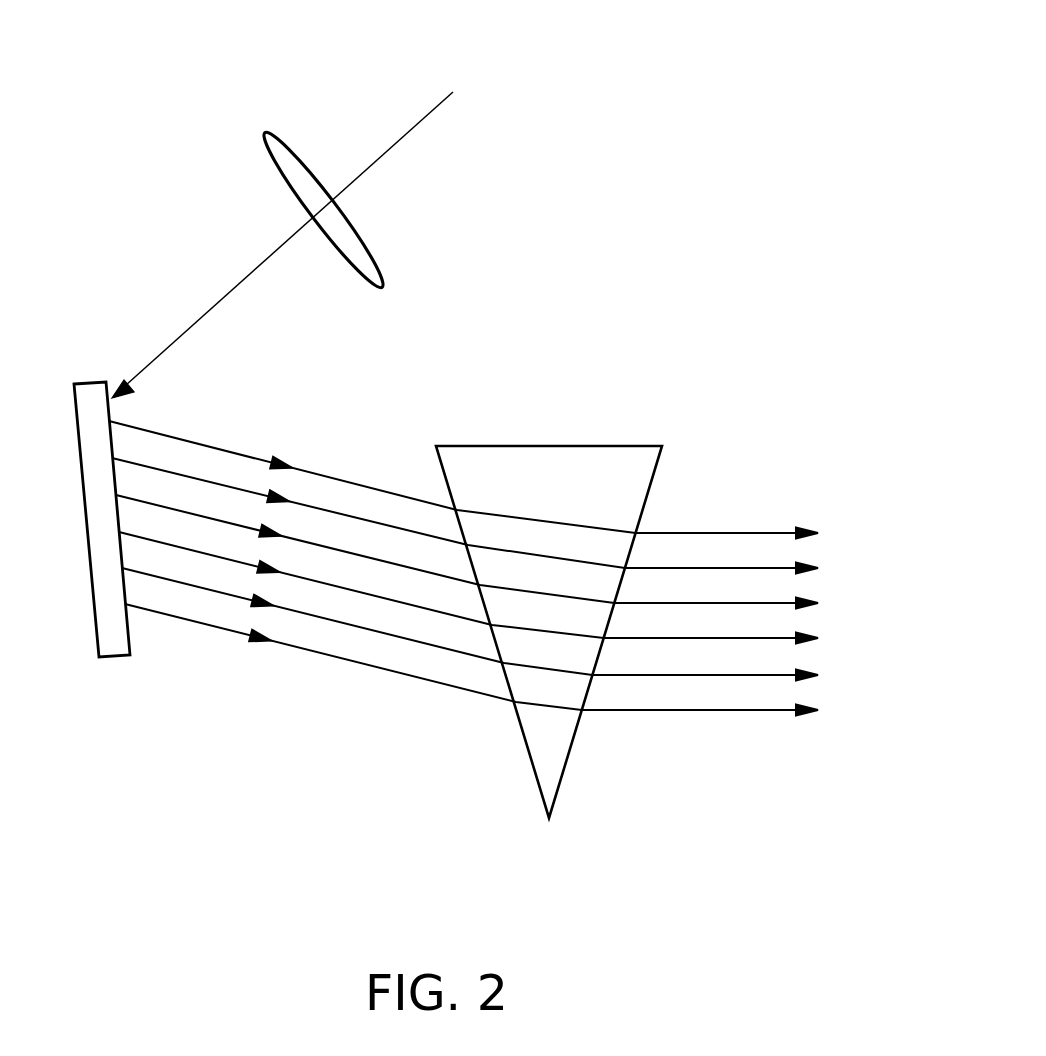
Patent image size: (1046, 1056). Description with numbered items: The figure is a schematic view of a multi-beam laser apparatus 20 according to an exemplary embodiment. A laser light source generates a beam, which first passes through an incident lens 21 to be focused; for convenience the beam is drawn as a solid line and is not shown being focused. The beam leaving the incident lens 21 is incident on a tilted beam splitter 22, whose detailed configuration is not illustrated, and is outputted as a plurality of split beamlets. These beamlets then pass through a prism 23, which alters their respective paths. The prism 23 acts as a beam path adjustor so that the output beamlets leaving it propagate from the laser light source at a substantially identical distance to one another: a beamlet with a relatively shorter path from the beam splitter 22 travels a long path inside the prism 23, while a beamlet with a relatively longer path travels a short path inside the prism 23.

The multi-beam laser apparatus 20 is at (727, 168).
The incident lens 21 is at (373, 252).
The beam splitter 22 is at (117, 657).
The prism 23 is at (653, 487).